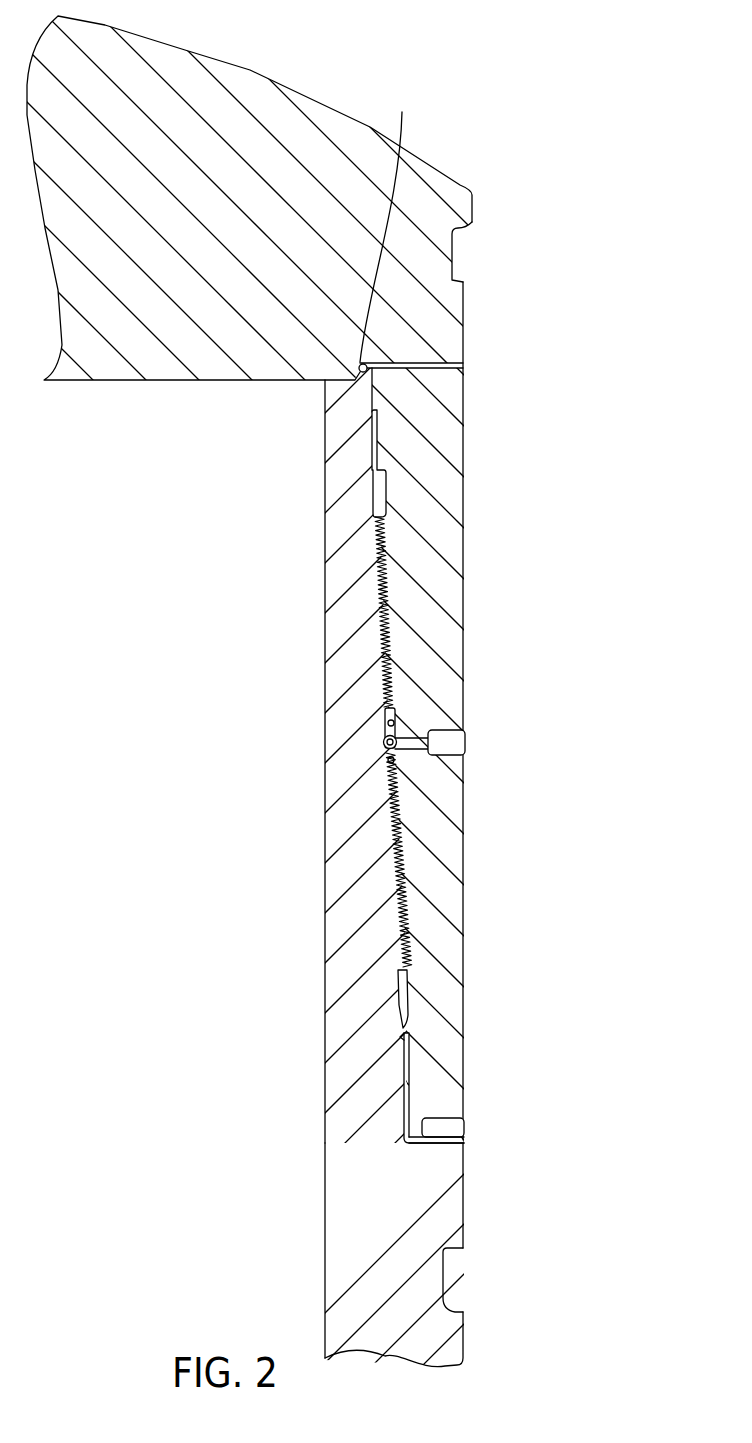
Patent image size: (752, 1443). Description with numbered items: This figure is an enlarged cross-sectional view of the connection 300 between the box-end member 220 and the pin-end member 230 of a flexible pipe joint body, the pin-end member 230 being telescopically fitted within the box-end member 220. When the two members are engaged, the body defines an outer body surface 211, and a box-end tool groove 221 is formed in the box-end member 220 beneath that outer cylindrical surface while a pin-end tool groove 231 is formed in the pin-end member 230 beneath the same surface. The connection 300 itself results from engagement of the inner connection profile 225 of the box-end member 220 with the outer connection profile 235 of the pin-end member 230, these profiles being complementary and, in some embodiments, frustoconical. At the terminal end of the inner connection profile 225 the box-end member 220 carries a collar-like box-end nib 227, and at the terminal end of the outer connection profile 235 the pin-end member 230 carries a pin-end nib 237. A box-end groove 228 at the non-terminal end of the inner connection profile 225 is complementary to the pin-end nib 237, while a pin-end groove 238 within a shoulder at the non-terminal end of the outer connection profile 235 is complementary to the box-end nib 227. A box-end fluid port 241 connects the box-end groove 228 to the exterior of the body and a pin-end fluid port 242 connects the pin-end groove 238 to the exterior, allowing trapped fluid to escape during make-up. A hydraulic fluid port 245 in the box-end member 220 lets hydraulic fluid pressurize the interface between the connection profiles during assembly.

The connection 300 is at (594, 372).
The box-end member 220 is at (432, 173).
The box-end tool groove 221 is at (453, 258).
The box-end groove 228 is at (388, 225).
The box-end fluid port 241 is at (465, 365).
The pin-end nib 237 is at (358, 372).
The outer body surface 211 is at (466, 526).
The inner connection profile 225 is at (397, 643).
The outer connection profile 235 is at (398, 790).
The hydraulic fluid port 245 is at (457, 748).
The pin-end groove 238 is at (402, 1123).
The box-end nib 227 is at (427, 1119).
The pin-end fluid port 242 is at (464, 1142).
The pin-end member 230 is at (465, 1200).
The pin-end tool groove 231 is at (443, 1287).